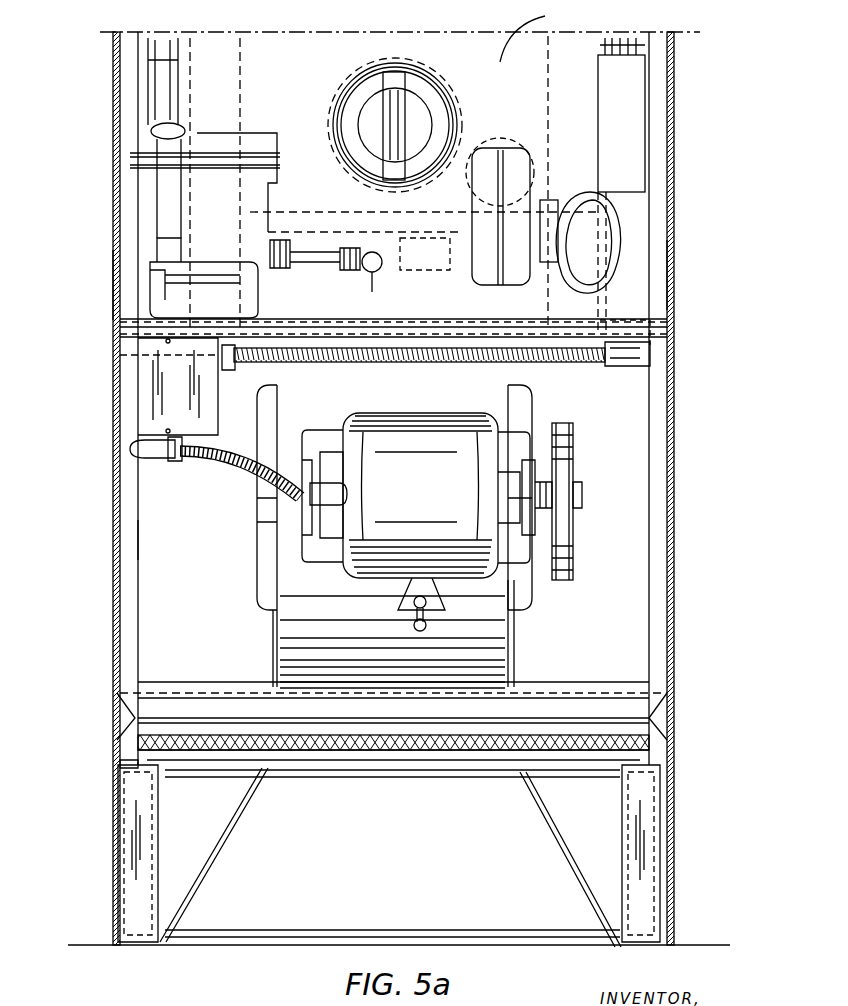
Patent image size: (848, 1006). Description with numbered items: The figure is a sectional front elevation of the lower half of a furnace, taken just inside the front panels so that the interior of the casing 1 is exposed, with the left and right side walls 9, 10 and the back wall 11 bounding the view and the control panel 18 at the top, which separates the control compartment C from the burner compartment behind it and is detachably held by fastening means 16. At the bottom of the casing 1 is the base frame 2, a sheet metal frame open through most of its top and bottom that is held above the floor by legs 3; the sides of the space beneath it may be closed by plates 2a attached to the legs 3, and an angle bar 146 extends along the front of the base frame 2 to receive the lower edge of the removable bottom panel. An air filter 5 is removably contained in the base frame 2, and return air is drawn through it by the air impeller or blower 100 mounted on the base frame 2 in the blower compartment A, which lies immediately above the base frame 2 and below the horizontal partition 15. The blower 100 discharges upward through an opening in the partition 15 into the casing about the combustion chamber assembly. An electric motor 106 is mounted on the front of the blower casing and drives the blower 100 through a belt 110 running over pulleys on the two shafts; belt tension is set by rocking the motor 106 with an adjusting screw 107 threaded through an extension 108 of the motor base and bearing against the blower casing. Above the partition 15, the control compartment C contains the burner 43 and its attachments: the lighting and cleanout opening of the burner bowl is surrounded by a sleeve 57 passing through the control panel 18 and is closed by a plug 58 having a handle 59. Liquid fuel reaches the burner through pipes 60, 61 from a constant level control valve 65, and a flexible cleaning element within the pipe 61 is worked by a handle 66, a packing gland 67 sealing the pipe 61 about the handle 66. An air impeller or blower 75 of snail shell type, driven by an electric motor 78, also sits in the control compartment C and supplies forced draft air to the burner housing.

The casing 1 is at (683, 419).
The base frame 2 is at (110, 754).
The plates 2a is at (112, 830).
The legs 3 is at (128, 856).
The air filter 5 is at (410, 746).
The side wall 9 is at (113, 292).
The side wall 10 is at (675, 276).
The back wall 11 is at (208, 551).
The horizontal partition 15 is at (398, 320).
The fastening means 16 is at (436, 345).
The control panel 18 is at (305, 52).
The burner 43 is at (550, 124).
The sleeve 57 is at (452, 110).
The plug 58 is at (432, 90).
The handle 59 is at (358, 78).
The pipe 60 is at (238, 312).
The pipe 61 is at (382, 260).
The constant level control valve 65 is at (225, 216).
The handle 66 is at (376, 290).
The packing gland 67 is at (365, 272).
The air impeller or blower 75 is at (518, 156).
The electric motor 78 is at (558, 194).
The air impeller or blower 100 is at (275, 568).
The electric motor 106 is at (430, 502).
The adjusting screw 107 is at (428, 626).
The extension 108 is at (432, 594).
The belt 110 is at (560, 425).
The angle bar 146 is at (446, 770).
The blower compartment A is at (622, 500).
The control compartment C is at (532, 34).